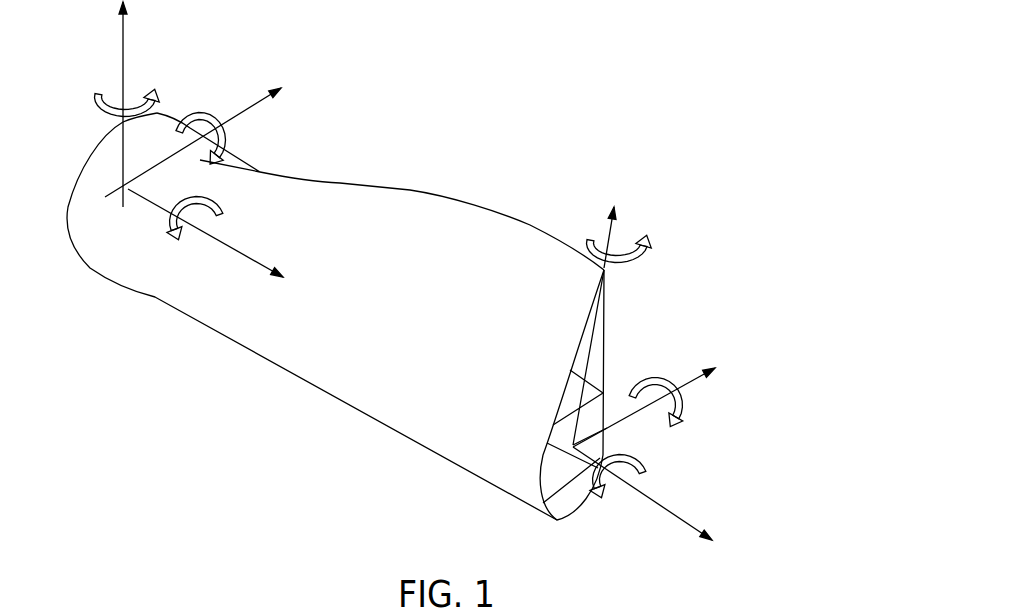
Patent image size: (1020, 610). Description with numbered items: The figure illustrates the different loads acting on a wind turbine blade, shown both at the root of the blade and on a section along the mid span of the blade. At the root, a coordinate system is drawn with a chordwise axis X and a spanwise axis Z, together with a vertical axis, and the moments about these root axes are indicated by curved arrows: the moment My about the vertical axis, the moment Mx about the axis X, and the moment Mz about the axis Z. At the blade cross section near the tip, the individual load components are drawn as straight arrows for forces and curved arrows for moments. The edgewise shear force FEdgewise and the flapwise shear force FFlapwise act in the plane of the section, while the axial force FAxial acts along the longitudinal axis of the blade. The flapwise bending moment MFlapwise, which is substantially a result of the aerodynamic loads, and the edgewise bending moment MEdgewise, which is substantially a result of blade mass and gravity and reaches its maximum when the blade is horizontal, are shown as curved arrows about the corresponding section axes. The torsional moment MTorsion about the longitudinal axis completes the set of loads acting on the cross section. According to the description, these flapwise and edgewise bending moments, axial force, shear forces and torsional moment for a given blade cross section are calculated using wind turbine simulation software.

The X axis (chordwise direction) X is at (201, 136).
The Z axis (spanwise direction) Z is at (213, 241).
The moment about Y axis My is at (112, 86).
The moment about X axis Mx is at (201, 121).
The moment about Z axis Mz is at (195, 243).
The edgewise shear force FEdgewise is at (616, 218).
The flapwise bending moment MFlapwise is at (669, 253).
The flapwise shear force FFlapwise is at (693, 399).
The edgewise bending moment MEdgewise is at (707, 418).
The torsional moment MTorsion is at (623, 501).
The axial force FAxial is at (673, 506).